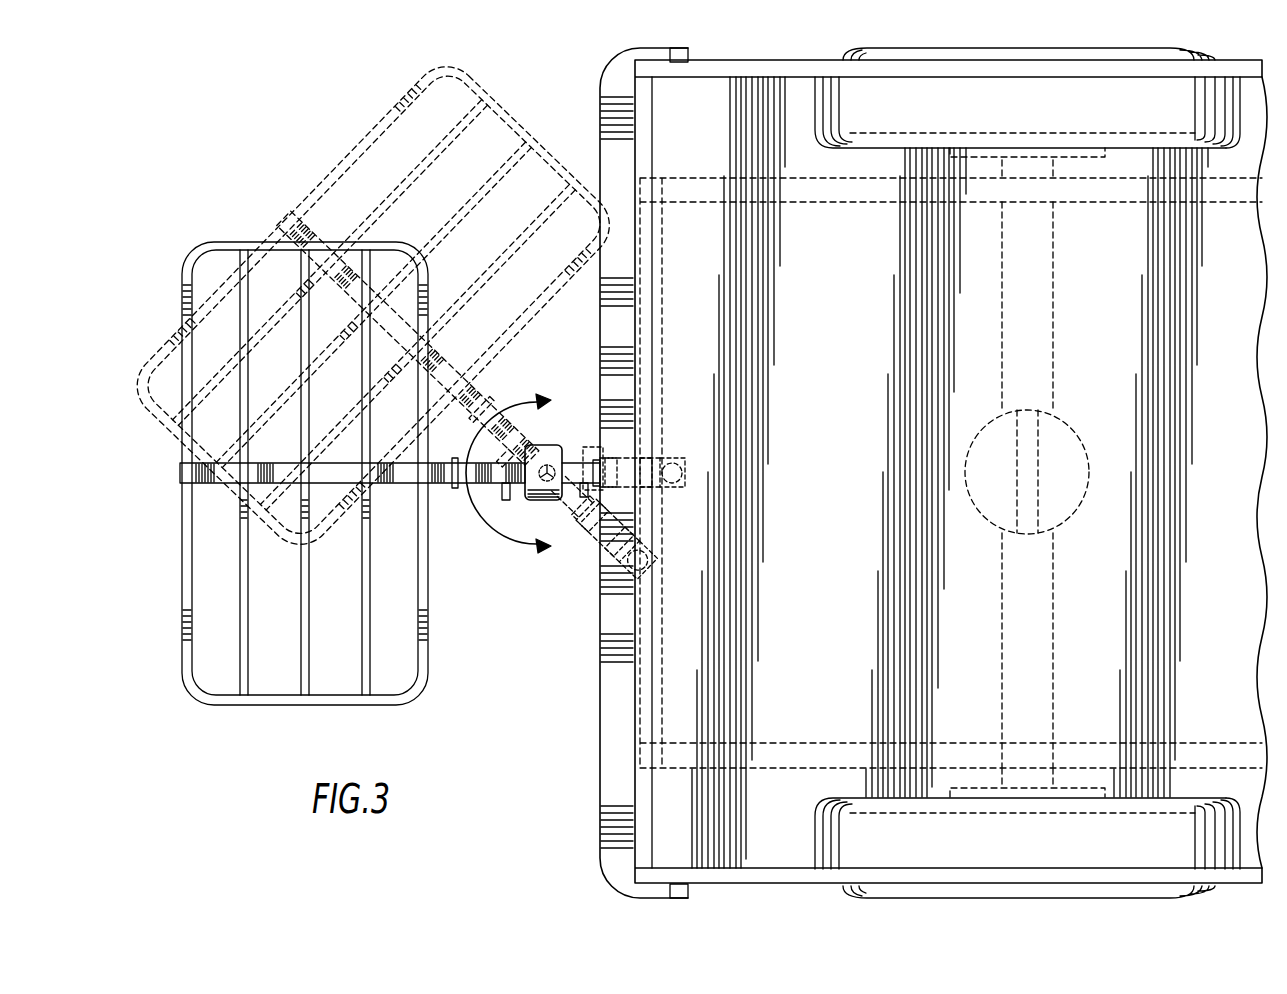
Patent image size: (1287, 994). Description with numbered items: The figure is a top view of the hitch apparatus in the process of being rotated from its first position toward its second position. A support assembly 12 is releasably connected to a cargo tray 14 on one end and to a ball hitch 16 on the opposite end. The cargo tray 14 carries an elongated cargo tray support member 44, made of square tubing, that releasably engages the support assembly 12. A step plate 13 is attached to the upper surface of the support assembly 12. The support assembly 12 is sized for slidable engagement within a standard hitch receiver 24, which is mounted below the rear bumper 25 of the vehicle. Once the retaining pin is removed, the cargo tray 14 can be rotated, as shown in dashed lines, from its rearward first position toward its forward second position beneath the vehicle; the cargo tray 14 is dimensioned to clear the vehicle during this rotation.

The support assembly 12 is at (548, 524).
The step plate 13 is at (549, 446).
The cargo tray 14 is at (353, 150).
The ball hitch 16 is at (669, 460).
The hitch receiver 24 is at (600, 450).
The rear bumper 25 is at (603, 695).
The cargo tray support member 44 is at (437, 352).